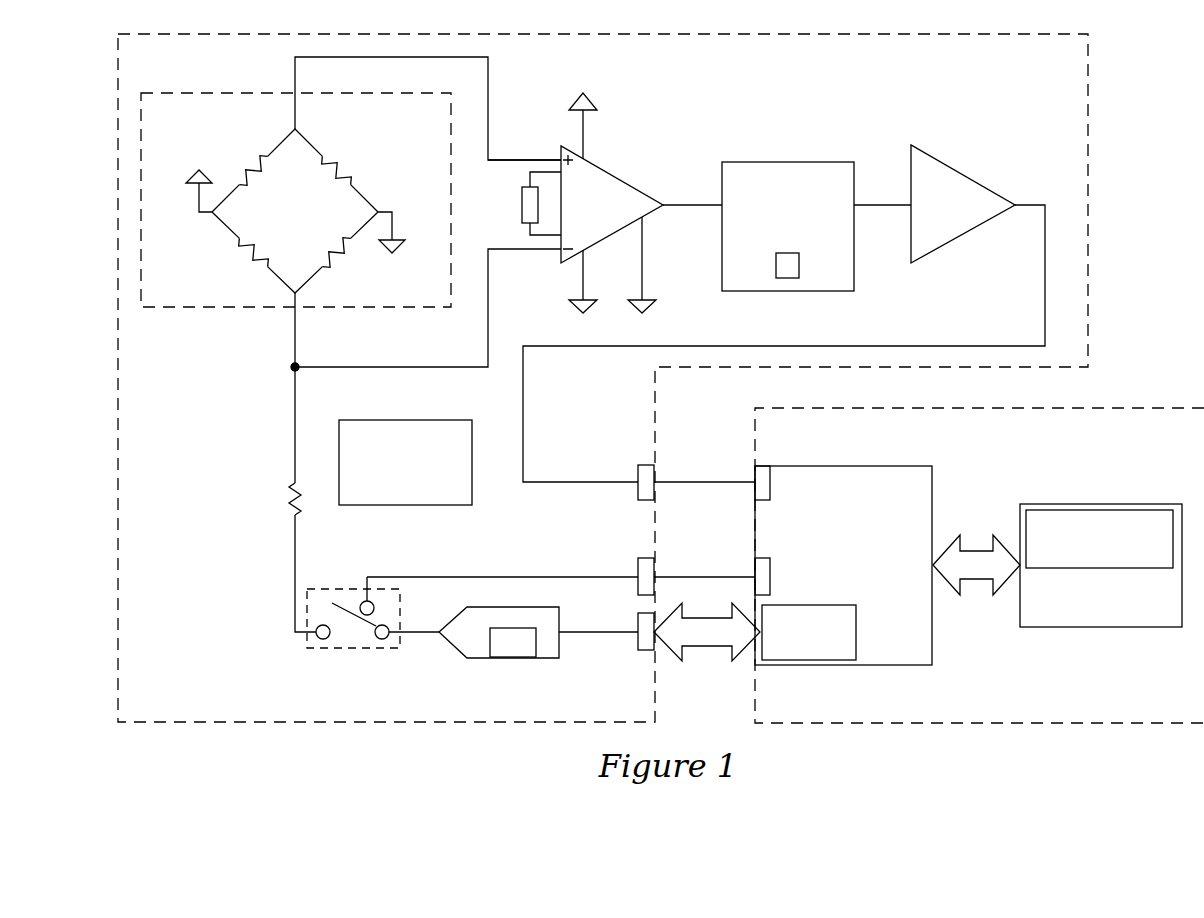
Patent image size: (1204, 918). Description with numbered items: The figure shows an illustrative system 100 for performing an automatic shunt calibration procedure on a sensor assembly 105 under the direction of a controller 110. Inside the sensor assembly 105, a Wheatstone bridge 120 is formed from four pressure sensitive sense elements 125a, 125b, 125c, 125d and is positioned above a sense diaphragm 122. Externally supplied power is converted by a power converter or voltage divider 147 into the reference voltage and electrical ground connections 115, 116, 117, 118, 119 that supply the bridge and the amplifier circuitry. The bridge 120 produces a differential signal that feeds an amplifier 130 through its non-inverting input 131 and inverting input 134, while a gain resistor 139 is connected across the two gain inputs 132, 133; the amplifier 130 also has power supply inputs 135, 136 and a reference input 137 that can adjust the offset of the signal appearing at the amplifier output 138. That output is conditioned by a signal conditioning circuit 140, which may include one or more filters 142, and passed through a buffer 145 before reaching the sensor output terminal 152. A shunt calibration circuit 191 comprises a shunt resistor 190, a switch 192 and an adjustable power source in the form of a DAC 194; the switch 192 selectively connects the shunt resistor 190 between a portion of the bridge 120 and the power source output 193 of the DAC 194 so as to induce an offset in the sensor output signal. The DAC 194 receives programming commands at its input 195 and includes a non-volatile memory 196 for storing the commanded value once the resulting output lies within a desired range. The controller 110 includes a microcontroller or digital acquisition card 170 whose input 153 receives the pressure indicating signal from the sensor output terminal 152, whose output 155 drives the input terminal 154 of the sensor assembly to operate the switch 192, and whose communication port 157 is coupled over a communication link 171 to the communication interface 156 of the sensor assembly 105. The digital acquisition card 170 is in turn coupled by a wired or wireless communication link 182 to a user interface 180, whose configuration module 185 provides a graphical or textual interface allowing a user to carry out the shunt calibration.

The system 100 is at (1121, 89).
The sensor assembly 105 is at (1088, 268).
The controller 110 is at (1105, 407).
The reference voltage/electrical ground connection 115 is at (196, 188).
The reference voltage/electrical ground connection 116 is at (394, 236).
The reference voltage/electrical ground connection 117 is at (597, 102).
The reference voltage/electrical ground connection 118 is at (598, 314).
The reference voltage/electrical ground connection 119 is at (655, 312).
The Wheatstone bridge 120 is at (243, 108).
The sense diaphragm 122 is at (222, 307).
The sense element 125a is at (267, 165).
The sense element 125b is at (322, 165).
The sense element 125c is at (330, 257).
The sense element 125d is at (265, 257).
The amplifier 130 is at (631, 180).
The non-inverting input 131 is at (510, 160).
The gain resistor input 132 is at (530, 172).
The gain resistor input 133 is at (530, 235).
The inverting input 134 is at (500, 252).
The power supply input 135 is at (583, 135).
The power supply input 136 is at (583, 277).
The reference input 137 is at (642, 278).
The amplifier output 138 is at (697, 200).
The gain resistor 139 is at (522, 205).
The signal conditioning circuit 140 is at (790, 162).
The filter 142 is at (790, 279).
The buffer 145 is at (962, 172).
The power converter/voltage divider 147 is at (408, 420).
The sensor output terminal 152 is at (648, 465).
The input 153 is at (763, 465).
The input terminal 154 is at (646, 558).
The output 155 is at (762, 558).
The communication interface 156 is at (646, 650).
The communication port 157 is at (808, 660).
The microcontroller and/or digital acquisition card 170 is at (875, 466).
The communication link 171 is at (695, 617).
The user interface 180 is at (1068, 504).
The communication link 182 is at (983, 580).
The configuration module 185 is at (1133, 510).
The shunt resistor 190 is at (290, 487).
The shunt calibration circuit 191 is at (209, 419).
The switch 192 is at (352, 648).
The power source output 193 is at (419, 632).
The digital to analog converter 194 is at (513, 658).
The input 195 is at (585, 632).
The non-volatile memory 196 is at (513, 642).